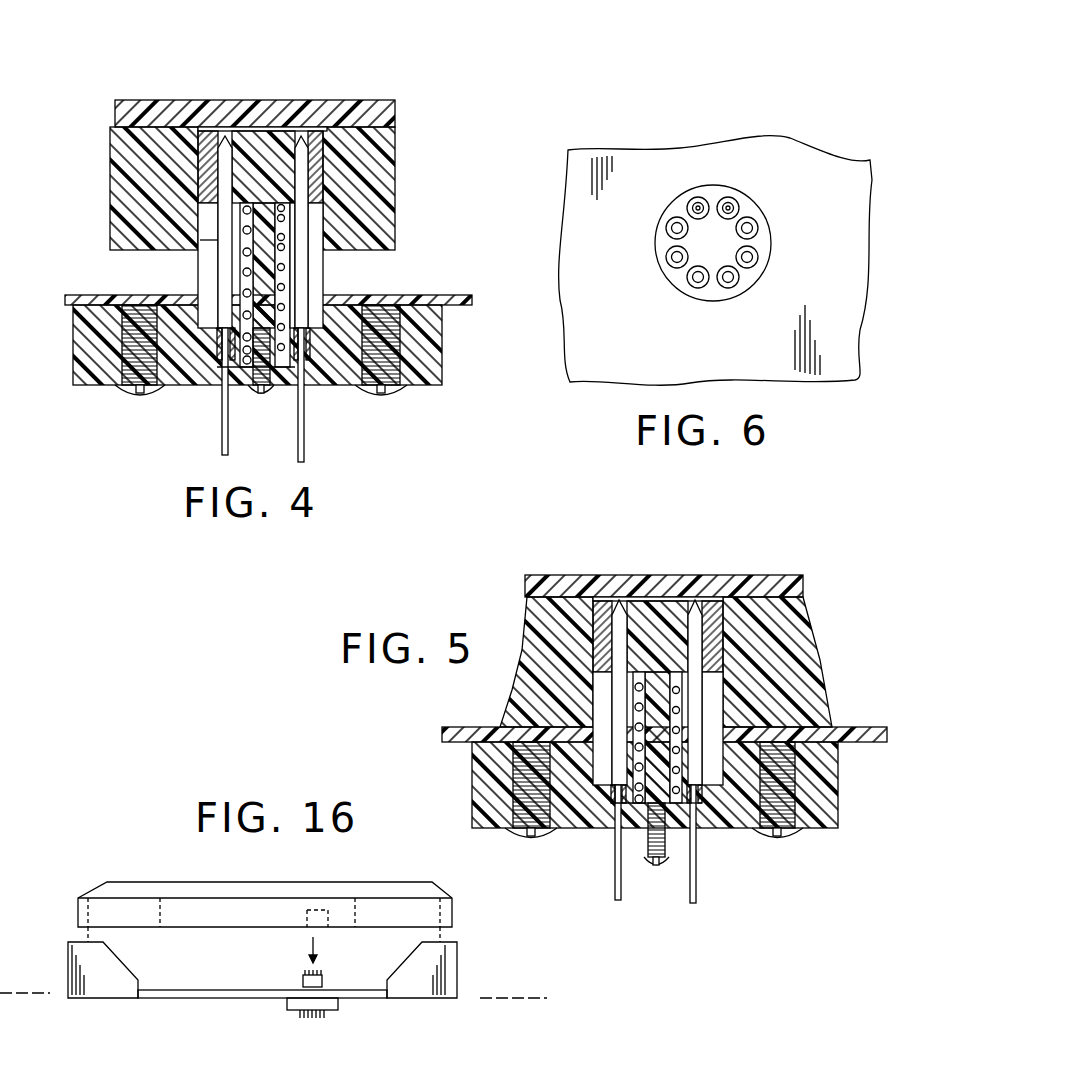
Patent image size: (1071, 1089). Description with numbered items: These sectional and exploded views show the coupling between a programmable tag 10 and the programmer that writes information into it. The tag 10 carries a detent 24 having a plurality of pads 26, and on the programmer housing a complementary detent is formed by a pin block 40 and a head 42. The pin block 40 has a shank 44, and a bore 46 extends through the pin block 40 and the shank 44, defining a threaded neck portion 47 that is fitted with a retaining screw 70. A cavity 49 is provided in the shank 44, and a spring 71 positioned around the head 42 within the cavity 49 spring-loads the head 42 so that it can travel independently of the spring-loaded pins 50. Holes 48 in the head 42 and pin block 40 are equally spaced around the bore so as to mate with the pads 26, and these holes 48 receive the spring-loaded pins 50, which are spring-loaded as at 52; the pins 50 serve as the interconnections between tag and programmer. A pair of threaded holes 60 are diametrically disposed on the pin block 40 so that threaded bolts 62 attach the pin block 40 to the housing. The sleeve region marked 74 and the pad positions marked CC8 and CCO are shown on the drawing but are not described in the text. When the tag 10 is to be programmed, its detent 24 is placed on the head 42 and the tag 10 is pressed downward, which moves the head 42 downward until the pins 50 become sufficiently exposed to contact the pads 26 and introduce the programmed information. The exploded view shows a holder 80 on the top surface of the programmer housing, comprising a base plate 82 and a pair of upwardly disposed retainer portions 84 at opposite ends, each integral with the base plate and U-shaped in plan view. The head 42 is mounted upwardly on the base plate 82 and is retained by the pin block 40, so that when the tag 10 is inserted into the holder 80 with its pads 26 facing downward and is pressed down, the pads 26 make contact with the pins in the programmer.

In FIG. 4, the tag 10 is at (155, 102).
In FIG. 5, the tag 10 is at (757, 557).
In FIG. 4, the head 42 is at (202, 128).
In FIG. 16, the head 42 is at (305, 977).
In FIG. 4, the pads 26 is at (223, 130).
In FIG. 6, the pads 26 is at (755, 228).
In FIG. 5, the pads 26 is at (620, 592).
In FIG. 4, the spring-loaded pins 50 is at (307, 127).
In FIG. 5, the spring-loaded pins 50 is at (697, 597).
In FIG. 4, the detent 24 is at (380, 166).
In FIG. 6, the detent 24 is at (672, 280).
In FIG. 5, the detent 24 is at (713, 632).
In FIG. 4, the pin receptacle sleeve 74 is at (307, 190).
In FIG. 4, the holes 48 is at (220, 258).
In FIG. 5, the holes 48 is at (603, 667).
In FIG. 4, the bore 46 is at (273, 281).
In FIG. 5, the bore 46 is at (685, 710).
In FIG. 4, the spring 71 is at (247, 272).
In FIG. 5, the spring 71 is at (713, 670).
In FIG. 4, the shank 44 is at (327, 281).
In FIG. 4, the pin block 40 is at (442, 349).
In FIG. 5, the pin block 40 is at (838, 790).
In FIG. 16, the pin block 40 is at (287, 1005).
In FIG. 4, the threaded holes 60 is at (332, 330).
In FIG. 4, the threaded bolts 62 is at (113, 390).
In FIG. 5, the threaded bolts 62 is at (512, 835).
In FIG. 4, the pin spring loading 52 is at (207, 382).
In FIG. 5, the pin spring loading 52 is at (610, 800).
In FIG. 4, the threaded neck portion 47 is at (247, 370).
In FIG. 5, the threaded neck portion 47 is at (647, 807).
In FIG. 5, the cavity 49 is at (667, 808).
In FIG. 4, the retaining screw 70 is at (268, 397).
In FIG. 5, the retaining screw 70 is at (656, 868).
In FIG. 6, the contact position CC8 is at (696, 205).
In FIG. 6, the contact position CCO is at (728, 206).
In FIG. 16, the retainer portions 84 is at (447, 960).
In FIG. 16, the base plate 82 is at (187, 995).
In FIG. 16, the holder 80 is at (405, 1005).